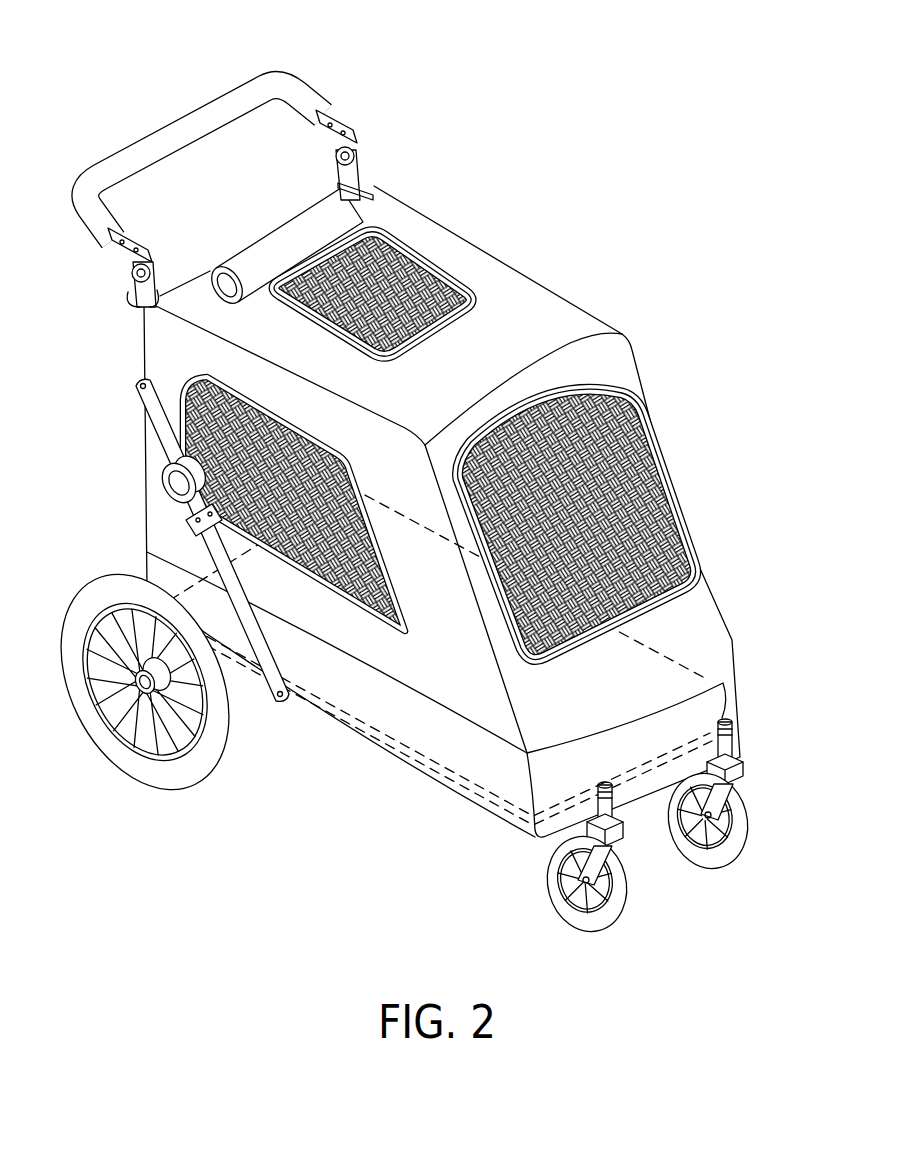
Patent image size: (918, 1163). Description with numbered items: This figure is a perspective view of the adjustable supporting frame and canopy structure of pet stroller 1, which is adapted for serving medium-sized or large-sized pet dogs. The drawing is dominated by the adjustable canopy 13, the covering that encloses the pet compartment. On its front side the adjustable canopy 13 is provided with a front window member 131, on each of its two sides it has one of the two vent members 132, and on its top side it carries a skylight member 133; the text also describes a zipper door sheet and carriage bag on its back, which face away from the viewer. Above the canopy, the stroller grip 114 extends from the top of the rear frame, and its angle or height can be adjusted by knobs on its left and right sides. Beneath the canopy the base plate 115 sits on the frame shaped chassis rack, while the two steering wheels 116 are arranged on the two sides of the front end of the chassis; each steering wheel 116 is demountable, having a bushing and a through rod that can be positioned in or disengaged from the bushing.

The adjustable supporting frame and canopy structure of pet stroller 1 is at (458, 99).
The adjustable canopy 13 is at (400, 507).
The stroller grip 114 is at (170, 125).
The base plate 115 is at (338, 713).
The steering wheels 116 is at (558, 873).
The front window member 131 is at (647, 498).
The vent members 132 is at (237, 436).
The skylight member 133 is at (398, 278).